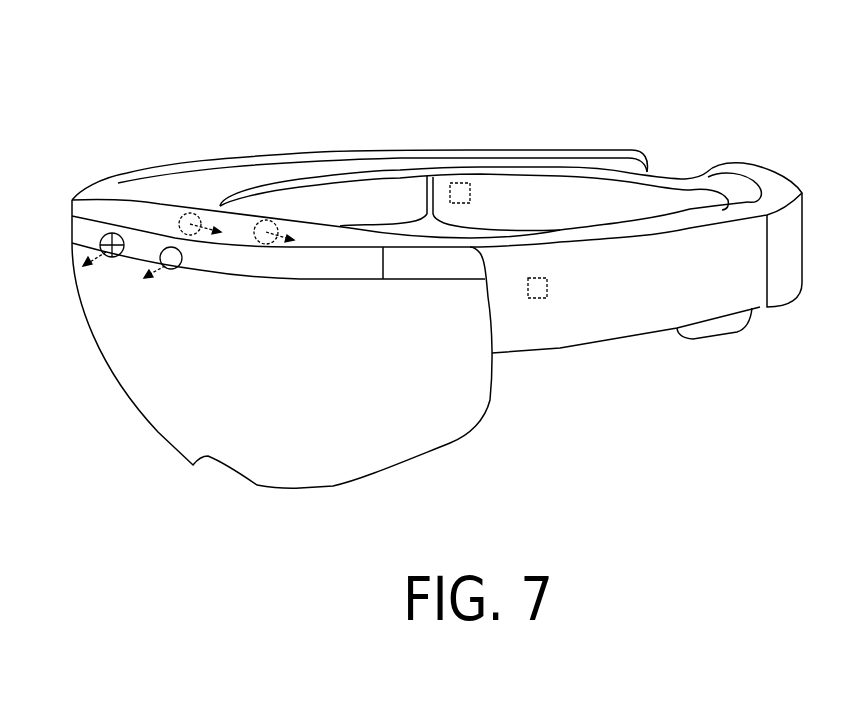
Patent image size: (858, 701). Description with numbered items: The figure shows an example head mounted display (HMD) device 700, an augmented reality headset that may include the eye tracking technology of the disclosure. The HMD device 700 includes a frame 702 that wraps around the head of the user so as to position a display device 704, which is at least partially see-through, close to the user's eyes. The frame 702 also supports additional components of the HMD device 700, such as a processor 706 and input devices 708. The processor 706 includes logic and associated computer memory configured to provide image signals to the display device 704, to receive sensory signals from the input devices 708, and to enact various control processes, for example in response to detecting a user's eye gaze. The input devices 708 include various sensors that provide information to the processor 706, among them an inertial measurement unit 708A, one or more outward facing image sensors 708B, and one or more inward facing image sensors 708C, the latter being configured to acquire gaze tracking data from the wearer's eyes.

The head mounted display (HMD) device 700 is at (637, 81).
The frame 702 is at (770, 190).
The display device 704 is at (157, 432).
The processor 706 is at (548, 287).
The input devices 708 is at (522, 128).
The inertial measurement unit (IMU) 708A is at (459, 183).
The outward facing image sensors 708B is at (110, 233).
The inward facing image sensors 708C is at (188, 215).